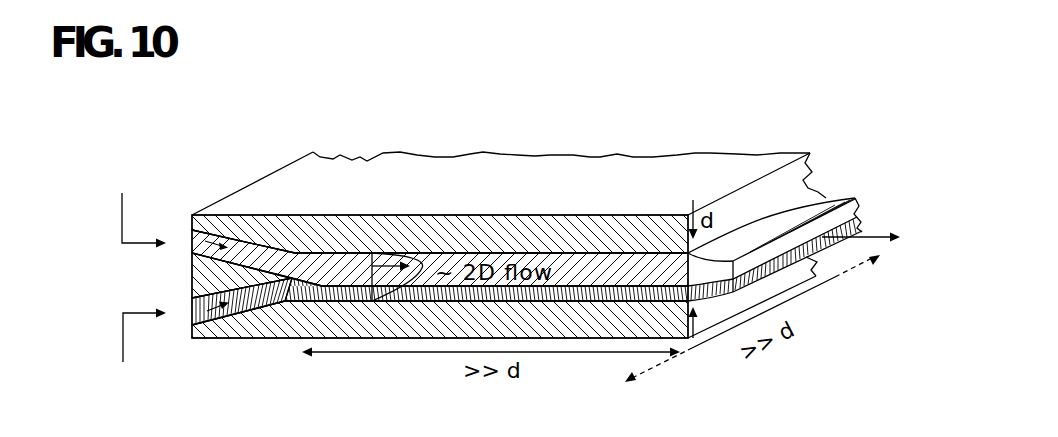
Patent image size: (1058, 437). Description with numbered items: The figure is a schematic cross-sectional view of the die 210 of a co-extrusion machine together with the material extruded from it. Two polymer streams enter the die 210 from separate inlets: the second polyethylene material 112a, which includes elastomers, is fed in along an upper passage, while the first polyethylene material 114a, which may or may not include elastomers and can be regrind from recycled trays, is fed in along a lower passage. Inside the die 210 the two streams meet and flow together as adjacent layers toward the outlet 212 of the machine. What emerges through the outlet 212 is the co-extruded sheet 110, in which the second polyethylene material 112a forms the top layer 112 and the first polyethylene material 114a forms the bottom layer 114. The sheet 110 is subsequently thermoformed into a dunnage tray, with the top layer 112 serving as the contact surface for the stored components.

The die 210 is at (367, 168).
The outlet 212 is at (689, 301).
The sheet 110 is at (812, 240).
The top layer 112 is at (815, 196).
The bottom layer 114 is at (806, 256).
The second polyethylene material 112a is at (196, 238).
The first polyethylene material 114a is at (192, 307).